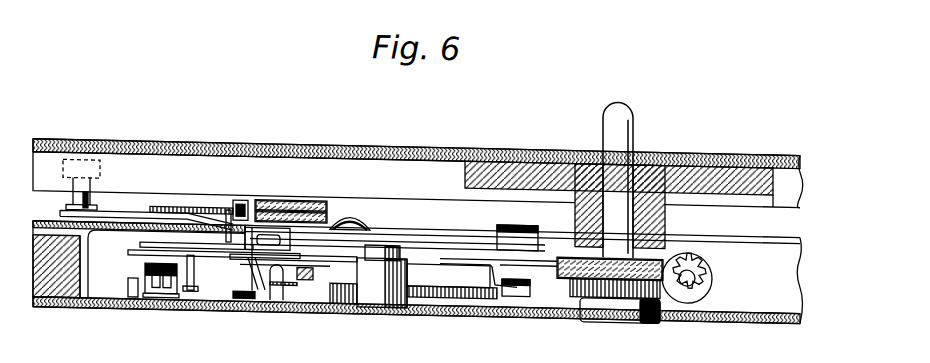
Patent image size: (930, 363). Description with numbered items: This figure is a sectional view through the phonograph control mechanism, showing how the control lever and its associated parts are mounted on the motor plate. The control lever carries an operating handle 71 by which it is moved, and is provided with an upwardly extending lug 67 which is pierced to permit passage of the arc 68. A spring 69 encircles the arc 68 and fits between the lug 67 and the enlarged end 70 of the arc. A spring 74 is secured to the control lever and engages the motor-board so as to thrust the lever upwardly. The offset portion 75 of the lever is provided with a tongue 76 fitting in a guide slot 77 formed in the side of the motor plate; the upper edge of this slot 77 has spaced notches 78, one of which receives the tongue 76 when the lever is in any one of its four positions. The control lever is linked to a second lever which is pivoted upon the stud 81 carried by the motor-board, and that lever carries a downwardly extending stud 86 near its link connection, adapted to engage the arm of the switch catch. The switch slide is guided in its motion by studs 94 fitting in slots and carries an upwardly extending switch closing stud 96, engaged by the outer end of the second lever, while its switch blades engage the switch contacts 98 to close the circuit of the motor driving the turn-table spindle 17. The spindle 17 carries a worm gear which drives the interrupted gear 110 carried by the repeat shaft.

The spindle 17 is at (619, 88).
The upwardly extending lug 67 is at (246, 200).
The arc 68 is at (178, 203).
The spring 69 is at (320, 195).
The enlarged end 70 is at (330, 208).
The operating handle 71 is at (95, 197).
The spring 74 is at (258, 287).
The offset portion 75 is at (247, 238).
The tongue 76 is at (267, 237).
The guide slot 77 is at (330, 285).
The spaced notches 78 is at (228, 205).
The stud 81 is at (390, 237).
The downwardly extending stud 86 is at (195, 264).
The studs 94 is at (147, 262).
The switch closing stud 96 is at (148, 240).
The switch contacts 98 is at (128, 277).
The interrupted gear 110 is at (712, 287).